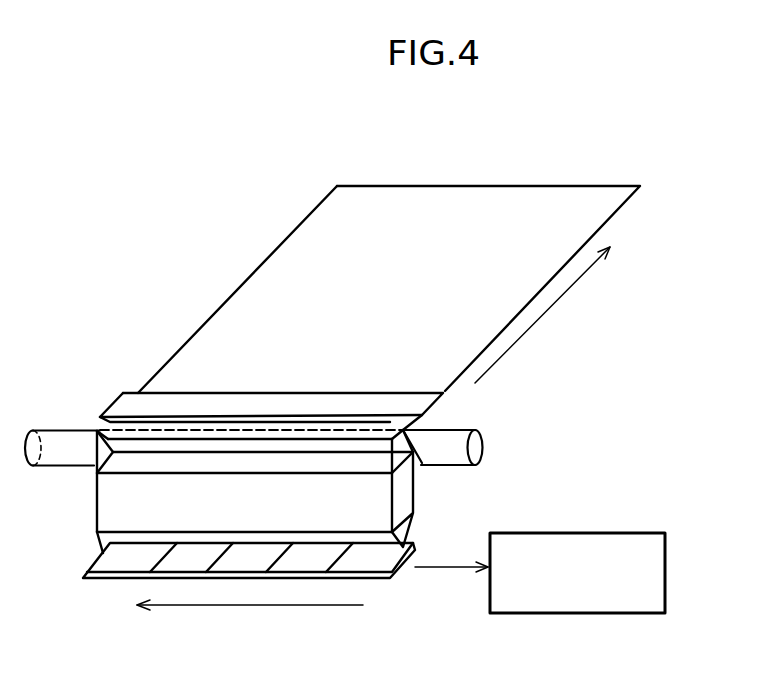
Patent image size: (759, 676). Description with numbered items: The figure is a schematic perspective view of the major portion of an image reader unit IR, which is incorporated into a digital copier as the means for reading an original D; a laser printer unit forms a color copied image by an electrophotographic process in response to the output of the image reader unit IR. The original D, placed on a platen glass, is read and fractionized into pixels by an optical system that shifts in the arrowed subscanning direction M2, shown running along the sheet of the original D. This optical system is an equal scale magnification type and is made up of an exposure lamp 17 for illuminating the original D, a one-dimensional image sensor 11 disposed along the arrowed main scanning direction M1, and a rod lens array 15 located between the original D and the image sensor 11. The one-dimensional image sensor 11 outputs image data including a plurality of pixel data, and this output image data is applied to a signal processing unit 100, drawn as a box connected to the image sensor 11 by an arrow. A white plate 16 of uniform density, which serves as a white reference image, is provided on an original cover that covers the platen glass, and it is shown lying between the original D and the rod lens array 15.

The original D is at (302, 237).
The image reader unit IR is at (107, 281).
The one-dimensional image sensor 11 is at (102, 585).
The rod lens array 15 is at (398, 494).
The white plate 16 is at (230, 393).
The exposure lamp 17 is at (483, 437).
The signal processing unit 100 is at (571, 532).
The main scanning direction M1 is at (301, 622).
The subscanning direction M2 is at (604, 303).